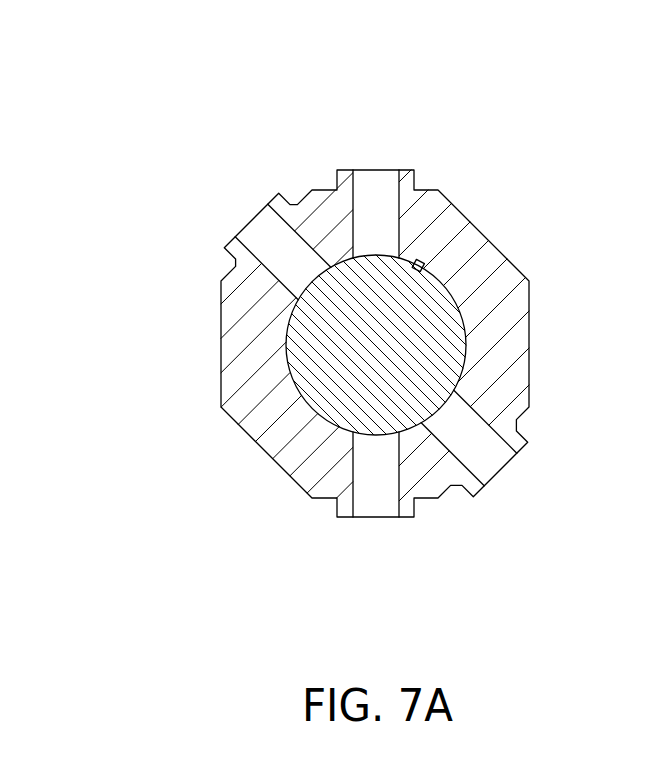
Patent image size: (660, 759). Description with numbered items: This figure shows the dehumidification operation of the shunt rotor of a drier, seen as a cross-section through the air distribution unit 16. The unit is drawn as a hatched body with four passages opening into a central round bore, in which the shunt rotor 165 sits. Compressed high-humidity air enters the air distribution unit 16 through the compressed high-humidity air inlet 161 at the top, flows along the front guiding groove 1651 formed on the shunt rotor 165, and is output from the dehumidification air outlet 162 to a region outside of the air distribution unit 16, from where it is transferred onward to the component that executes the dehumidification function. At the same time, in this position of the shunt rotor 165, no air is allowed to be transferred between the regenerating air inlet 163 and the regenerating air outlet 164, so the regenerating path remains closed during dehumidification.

The air distribution unit 16 is at (133, 135).
The compressed high-humidity air inlet 161 is at (370, 190).
The dehumidification air outlet 162 is at (266, 241).
The regenerating air inlet 163 is at (480, 453).
The regenerating air outlet 164 is at (373, 495).
The shunt rotor 165 is at (431, 318).
The front guiding groove 1651 is at (415, 265).